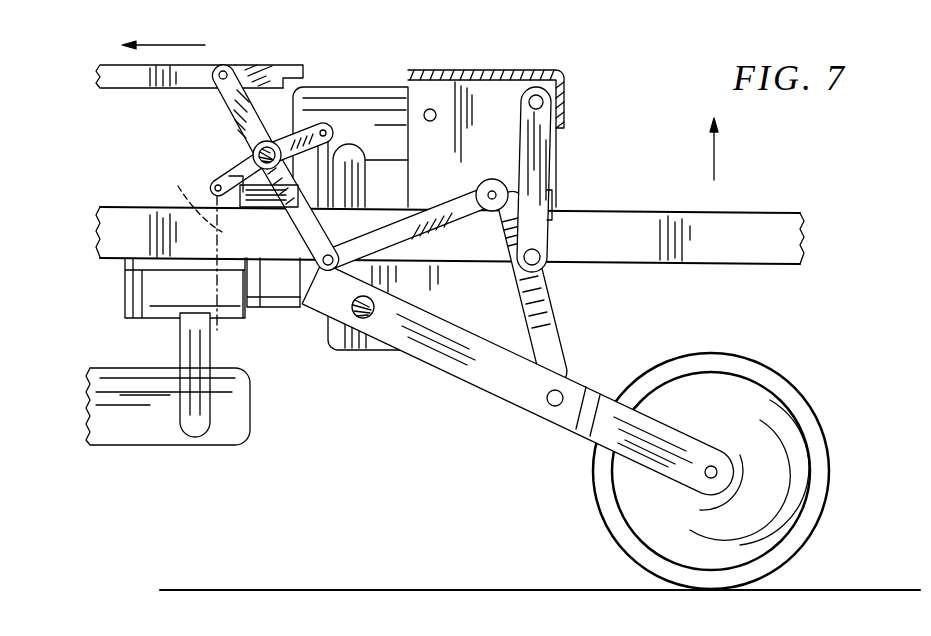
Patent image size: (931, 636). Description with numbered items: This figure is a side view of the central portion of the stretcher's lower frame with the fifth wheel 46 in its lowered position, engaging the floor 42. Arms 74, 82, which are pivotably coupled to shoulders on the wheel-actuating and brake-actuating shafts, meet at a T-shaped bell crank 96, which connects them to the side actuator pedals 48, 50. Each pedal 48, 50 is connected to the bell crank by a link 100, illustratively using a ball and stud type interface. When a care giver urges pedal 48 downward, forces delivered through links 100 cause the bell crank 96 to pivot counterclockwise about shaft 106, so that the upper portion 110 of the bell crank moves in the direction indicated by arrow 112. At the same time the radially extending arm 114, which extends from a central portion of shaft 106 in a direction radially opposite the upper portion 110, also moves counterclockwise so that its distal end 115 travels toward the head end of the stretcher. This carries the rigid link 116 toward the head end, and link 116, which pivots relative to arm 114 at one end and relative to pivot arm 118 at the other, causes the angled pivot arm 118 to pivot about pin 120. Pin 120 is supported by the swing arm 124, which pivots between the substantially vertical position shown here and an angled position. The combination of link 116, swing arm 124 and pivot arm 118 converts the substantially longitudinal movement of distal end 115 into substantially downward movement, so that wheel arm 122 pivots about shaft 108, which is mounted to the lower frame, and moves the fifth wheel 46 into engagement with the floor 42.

The floor 42 is at (840, 588).
The fifth wheel 46 is at (770, 368).
The side actuator pedal 48 is at (236, 434).
The side actuator pedal 50 is at (373, 103).
The arm 74 is at (272, 76).
The arm 82 is at (178, 70).
The T-shaped bell crank 96 is at (242, 118).
The link 100 is at (372, 178).
The shaft 106 is at (262, 157).
The shaft 108 is at (356, 316).
The upper portion of bell crank 110 is at (241, 56).
The arrow 112 is at (188, 45).
The radially extending arm 114 is at (300, 233).
The distal end 115 is at (300, 280).
The link 116 is at (457, 240).
The pivot arm 118 is at (546, 332).
The pin 120 is at (540, 252).
The wheel arm 122 is at (512, 388).
The swing arm 124 is at (549, 150).